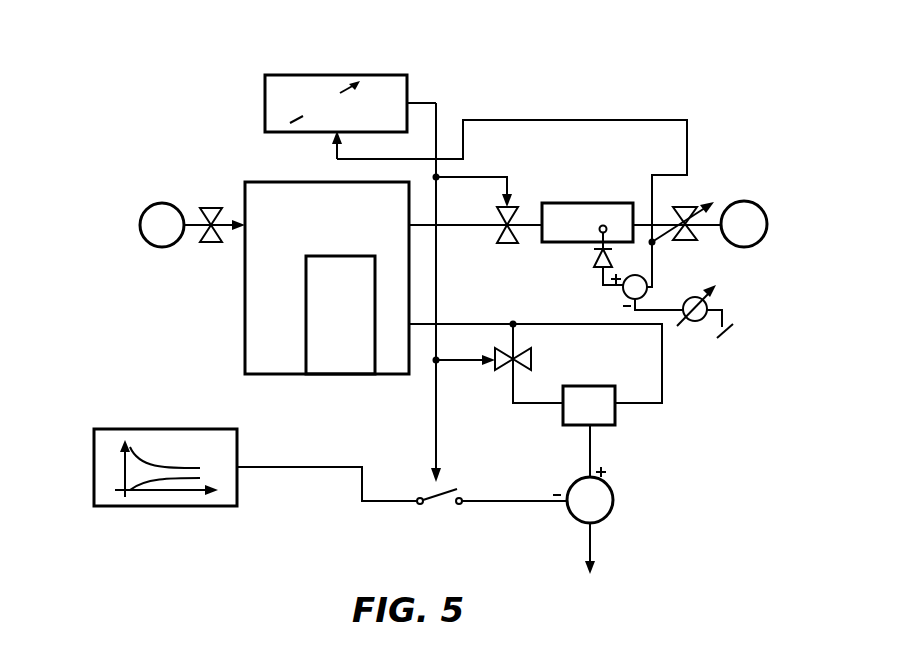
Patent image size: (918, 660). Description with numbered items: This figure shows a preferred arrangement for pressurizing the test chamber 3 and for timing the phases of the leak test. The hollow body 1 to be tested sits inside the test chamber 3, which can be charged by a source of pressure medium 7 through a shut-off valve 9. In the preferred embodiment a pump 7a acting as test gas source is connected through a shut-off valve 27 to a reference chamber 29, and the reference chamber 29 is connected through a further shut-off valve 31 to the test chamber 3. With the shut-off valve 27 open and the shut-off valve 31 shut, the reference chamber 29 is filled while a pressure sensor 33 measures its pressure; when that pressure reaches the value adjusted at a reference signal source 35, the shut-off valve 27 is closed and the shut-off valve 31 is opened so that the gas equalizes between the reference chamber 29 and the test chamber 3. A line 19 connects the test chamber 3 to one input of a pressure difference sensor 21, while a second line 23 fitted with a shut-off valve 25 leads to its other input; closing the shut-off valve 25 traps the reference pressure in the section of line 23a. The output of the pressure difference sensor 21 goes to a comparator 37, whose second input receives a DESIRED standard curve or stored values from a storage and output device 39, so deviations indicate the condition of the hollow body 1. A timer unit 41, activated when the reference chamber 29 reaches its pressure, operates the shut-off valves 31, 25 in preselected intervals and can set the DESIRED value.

The hollow body 1 is at (306, 313).
The test chamber 3 is at (245, 268).
The source of pressure medium 7 is at (170, 203).
The pump 7a is at (761, 207).
The shut-off valve 9 is at (218, 208).
The line 19 is at (578, 325).
The pressure difference sensor 21 is at (603, 426).
The second line 23 is at (500, 350).
The section of line 23a is at (545, 405).
The shut-off valve 25 is at (505, 372).
The shut-off valve 27 is at (695, 230).
The reference chamber 29 is at (588, 203).
The shut-off valve 31 is at (518, 206).
The pressure sensor 33 is at (595, 259).
The reference signal source 35 is at (699, 321).
The comparator 37 is at (612, 508).
The storage and output device 39 is at (178, 506).
The timer unit 41 is at (265, 112).